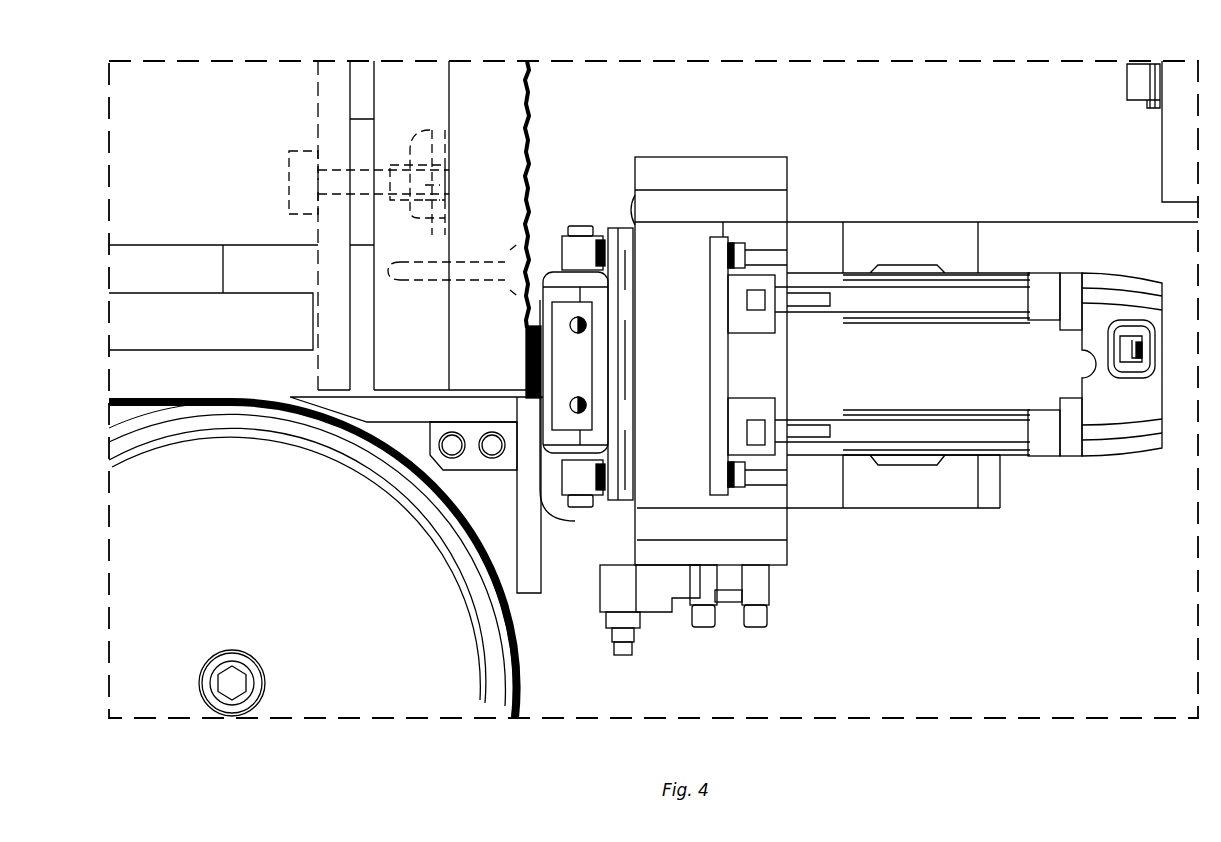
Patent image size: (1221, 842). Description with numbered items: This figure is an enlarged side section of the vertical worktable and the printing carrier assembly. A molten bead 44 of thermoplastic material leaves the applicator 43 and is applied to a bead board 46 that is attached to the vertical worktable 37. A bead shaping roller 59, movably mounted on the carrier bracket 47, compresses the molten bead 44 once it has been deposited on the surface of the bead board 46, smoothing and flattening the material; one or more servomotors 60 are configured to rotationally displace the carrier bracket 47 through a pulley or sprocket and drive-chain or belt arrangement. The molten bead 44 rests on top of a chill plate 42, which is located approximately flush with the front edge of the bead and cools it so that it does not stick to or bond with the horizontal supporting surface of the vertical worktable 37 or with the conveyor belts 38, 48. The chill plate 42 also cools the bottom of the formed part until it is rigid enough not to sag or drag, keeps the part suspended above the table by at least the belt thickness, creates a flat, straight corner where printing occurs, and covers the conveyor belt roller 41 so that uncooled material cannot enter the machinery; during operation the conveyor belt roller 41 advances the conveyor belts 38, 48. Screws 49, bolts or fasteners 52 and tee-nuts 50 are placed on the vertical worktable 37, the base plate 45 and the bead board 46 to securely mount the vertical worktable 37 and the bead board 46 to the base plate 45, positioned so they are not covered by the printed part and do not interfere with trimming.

The vertical worktable 37 is at (333, 80).
The base plate 45 is at (420, 80).
The bead board 46 is at (498, 80).
The bolts/fasteners 52 is at (300, 153).
The tee-nuts 50 is at (430, 130).
The screws 49 is at (510, 250).
The carrier bracket 47 is at (625, 228).
The molten bead 44 is at (538, 330).
The bead shaping roller 59 is at (575, 521).
The applicator 43 is at (796, 596).
The chill plate 42 is at (500, 408).
The conveyor belt roller 41 is at (355, 617).
The conveyor belt 38 is at (520, 656).
The conveyor belt 48 is at (311, 559).
The servomotor 60 is at (1118, 457).